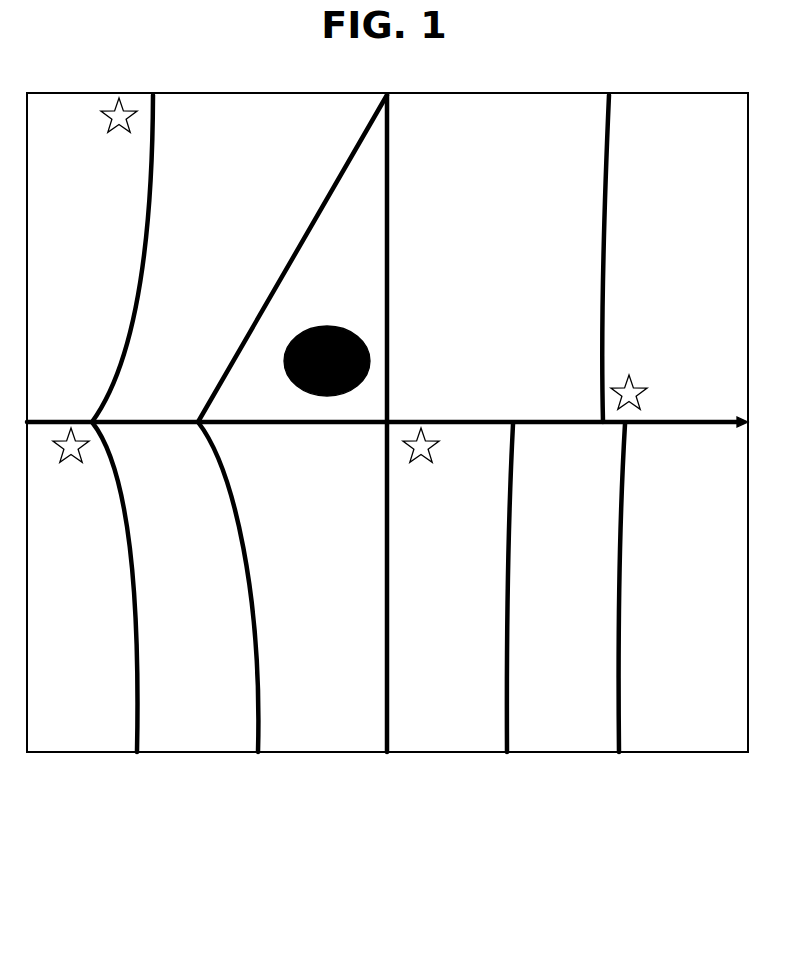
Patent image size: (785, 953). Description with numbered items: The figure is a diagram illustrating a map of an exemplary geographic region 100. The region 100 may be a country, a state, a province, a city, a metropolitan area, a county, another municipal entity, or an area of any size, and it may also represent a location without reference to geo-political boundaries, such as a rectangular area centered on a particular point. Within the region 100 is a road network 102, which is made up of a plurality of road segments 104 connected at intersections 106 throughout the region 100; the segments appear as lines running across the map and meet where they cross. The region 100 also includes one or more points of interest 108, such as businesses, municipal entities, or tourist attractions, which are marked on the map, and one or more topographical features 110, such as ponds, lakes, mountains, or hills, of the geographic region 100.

The geographic region 100 is at (313, 785).
The road network 102 is at (262, 194).
The road segments 104 is at (592, 211).
The intersections 106 is at (371, 436).
The points of interest 108 is at (106, 142).
The topographical features 110 is at (330, 314).